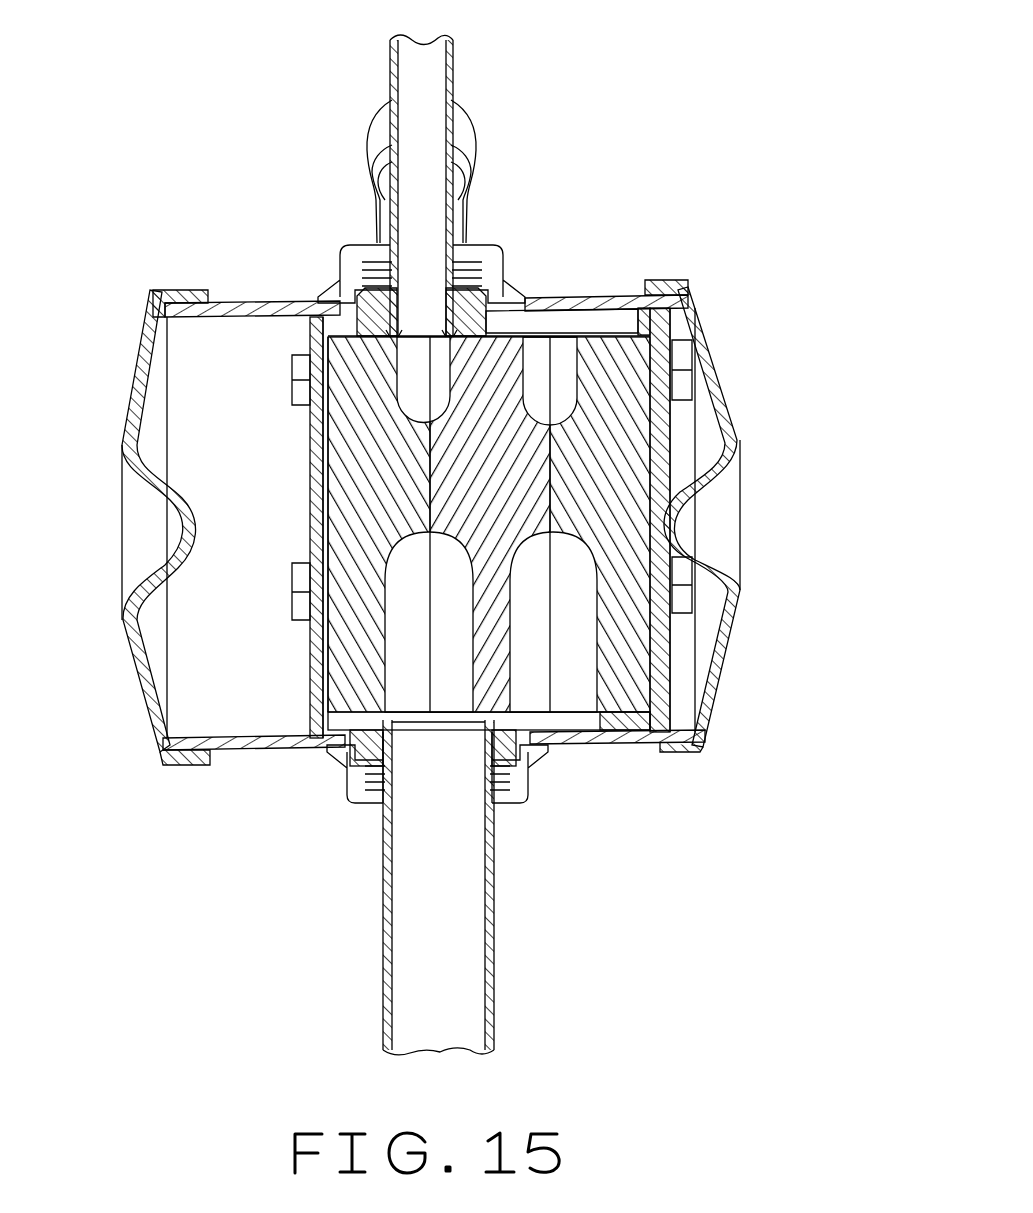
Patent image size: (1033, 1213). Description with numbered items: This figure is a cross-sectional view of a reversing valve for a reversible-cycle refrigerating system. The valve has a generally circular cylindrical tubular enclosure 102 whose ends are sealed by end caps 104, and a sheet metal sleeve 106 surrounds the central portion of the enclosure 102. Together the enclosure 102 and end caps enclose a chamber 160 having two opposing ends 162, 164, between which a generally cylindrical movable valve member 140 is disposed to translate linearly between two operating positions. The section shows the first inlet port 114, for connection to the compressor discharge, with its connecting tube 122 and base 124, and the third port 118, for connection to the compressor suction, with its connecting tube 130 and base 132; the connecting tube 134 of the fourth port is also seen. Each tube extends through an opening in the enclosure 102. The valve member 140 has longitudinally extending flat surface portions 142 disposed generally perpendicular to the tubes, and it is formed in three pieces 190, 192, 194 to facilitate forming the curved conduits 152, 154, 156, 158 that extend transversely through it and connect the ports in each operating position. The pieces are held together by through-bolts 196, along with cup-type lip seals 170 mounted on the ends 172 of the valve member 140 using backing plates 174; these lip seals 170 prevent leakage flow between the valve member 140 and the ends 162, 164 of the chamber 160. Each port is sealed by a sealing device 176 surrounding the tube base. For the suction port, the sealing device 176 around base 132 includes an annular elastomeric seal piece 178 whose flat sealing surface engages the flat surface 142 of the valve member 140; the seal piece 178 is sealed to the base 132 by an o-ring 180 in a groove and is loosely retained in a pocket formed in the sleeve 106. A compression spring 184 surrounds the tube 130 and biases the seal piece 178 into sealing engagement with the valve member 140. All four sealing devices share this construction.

The tubular enclosure 102 is at (222, 303).
The end caps 104 is at (132, 378).
The sheet metal sleeve 106 is at (372, 262).
The first inlet port 114 is at (468, 44).
The third port 118 is at (366, 905).
The connecting tube 122 is at (392, 75).
The base 124 is at (470, 300).
The connecting tube 130 is at (382, 948).
The base 132 is at (360, 765).
The connecting tube 134 is at (380, 232).
The movable valve member 140 is at (490, 498).
The flat surface portions 142 is at (633, 310).
The curved conduit 152 is at (410, 435).
The curved conduit 154 is at (400, 568).
The curved conduit 156 is at (578, 350).
The curved conduit 158 is at (708, 748).
The chamber 160 is at (170, 750).
The chamber end 162 is at (700, 674).
The chamber end 164 is at (190, 683).
The cup-type lip seals 170 is at (318, 337).
The ends of the valve member 172 is at (318, 489).
The backing plates 174 is at (312, 656).
The sealing device 176 is at (500, 133).
The seal piece 178 is at (315, 301).
The o-ring 180 is at (512, 745).
The compression spring 184 is at (372, 852).
The valve member piece 190 is at (345, 690).
The valve member piece 192 is at (533, 330).
The valve member piece 194 is at (700, 337).
The through-bolts 196 is at (295, 606).